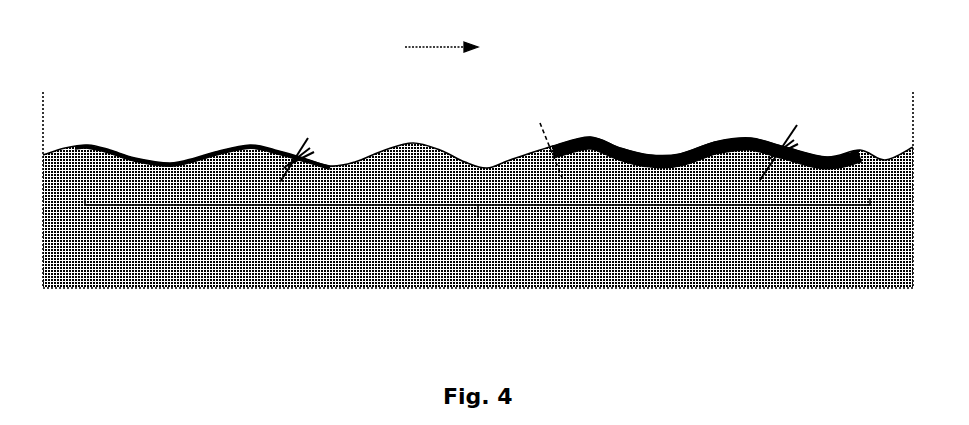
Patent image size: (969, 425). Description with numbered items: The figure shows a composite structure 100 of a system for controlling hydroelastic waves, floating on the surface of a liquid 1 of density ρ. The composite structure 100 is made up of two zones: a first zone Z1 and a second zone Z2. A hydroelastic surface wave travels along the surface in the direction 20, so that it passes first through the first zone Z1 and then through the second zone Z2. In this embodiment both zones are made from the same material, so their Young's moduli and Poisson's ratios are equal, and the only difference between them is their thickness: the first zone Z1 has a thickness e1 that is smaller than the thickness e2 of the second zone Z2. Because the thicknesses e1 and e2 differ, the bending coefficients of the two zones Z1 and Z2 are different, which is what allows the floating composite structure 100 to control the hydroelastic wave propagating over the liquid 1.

The liquid 1 is at (117, 255).
The composite structure 100 is at (477, 228).
The direction 20 is at (441, 35).
The first zone Z1 is at (258, 143).
The second zone Z2 is at (720, 145).
The thickness of the first zone e1 is at (305, 146).
The thickness of the second zone e2 is at (787, 146).